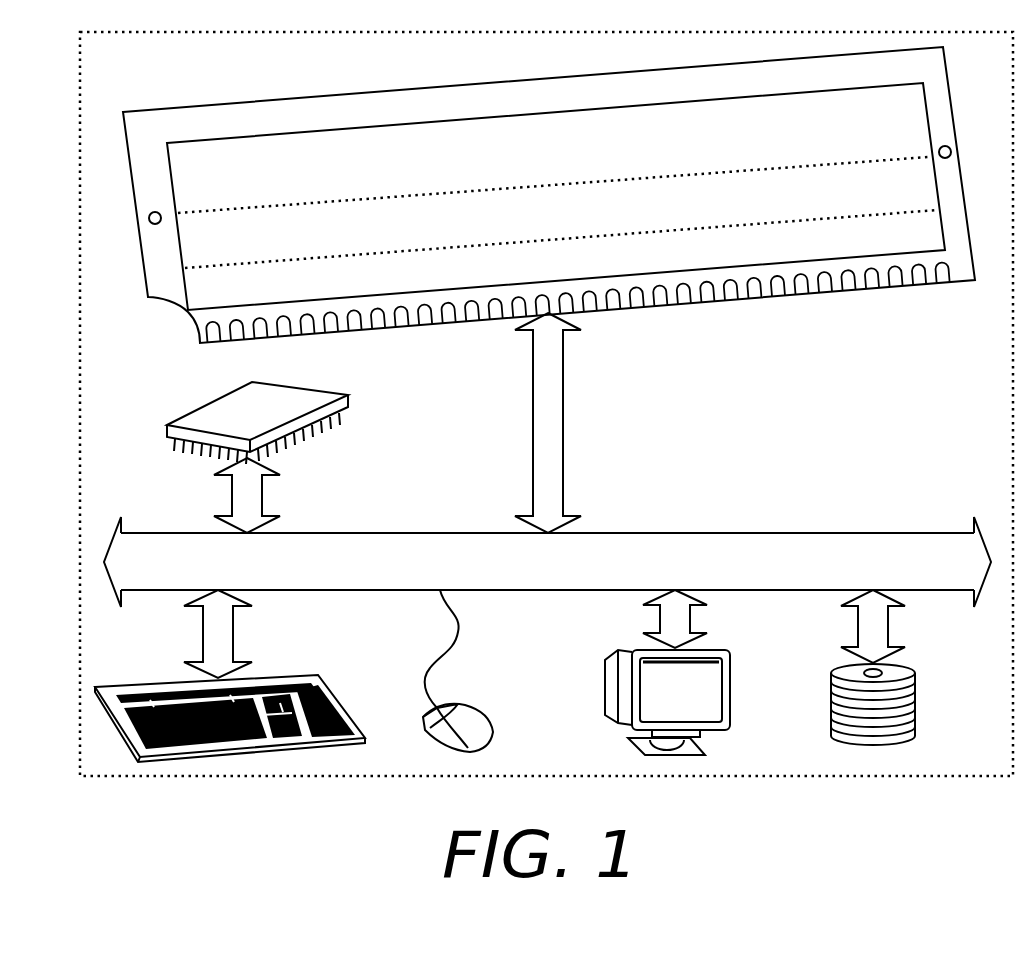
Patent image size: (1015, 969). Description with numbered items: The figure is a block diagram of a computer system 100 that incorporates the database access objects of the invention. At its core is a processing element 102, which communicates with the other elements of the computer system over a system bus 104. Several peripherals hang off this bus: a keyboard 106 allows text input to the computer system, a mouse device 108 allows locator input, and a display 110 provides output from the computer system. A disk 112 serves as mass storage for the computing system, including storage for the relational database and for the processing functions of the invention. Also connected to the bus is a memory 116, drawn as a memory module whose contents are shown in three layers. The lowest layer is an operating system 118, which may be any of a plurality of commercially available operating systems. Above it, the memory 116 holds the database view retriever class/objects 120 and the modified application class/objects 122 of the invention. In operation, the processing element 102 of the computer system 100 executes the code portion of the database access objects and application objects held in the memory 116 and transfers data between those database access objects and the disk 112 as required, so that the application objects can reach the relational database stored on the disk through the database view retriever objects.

The computer system 100 is at (198, 778).
The processing element 102 is at (312, 384).
The system bus 104 is at (370, 533).
The keyboard 106 is at (295, 672).
The mouse device 108 is at (478, 710).
The display 110 is at (730, 675).
The disk 112 is at (905, 665).
The memory 116 is at (340, 93).
The operating system 118 is at (186, 311).
The database view retriever class/objects 120 is at (183, 228).
The modified application class/objects 122 is at (217, 152).